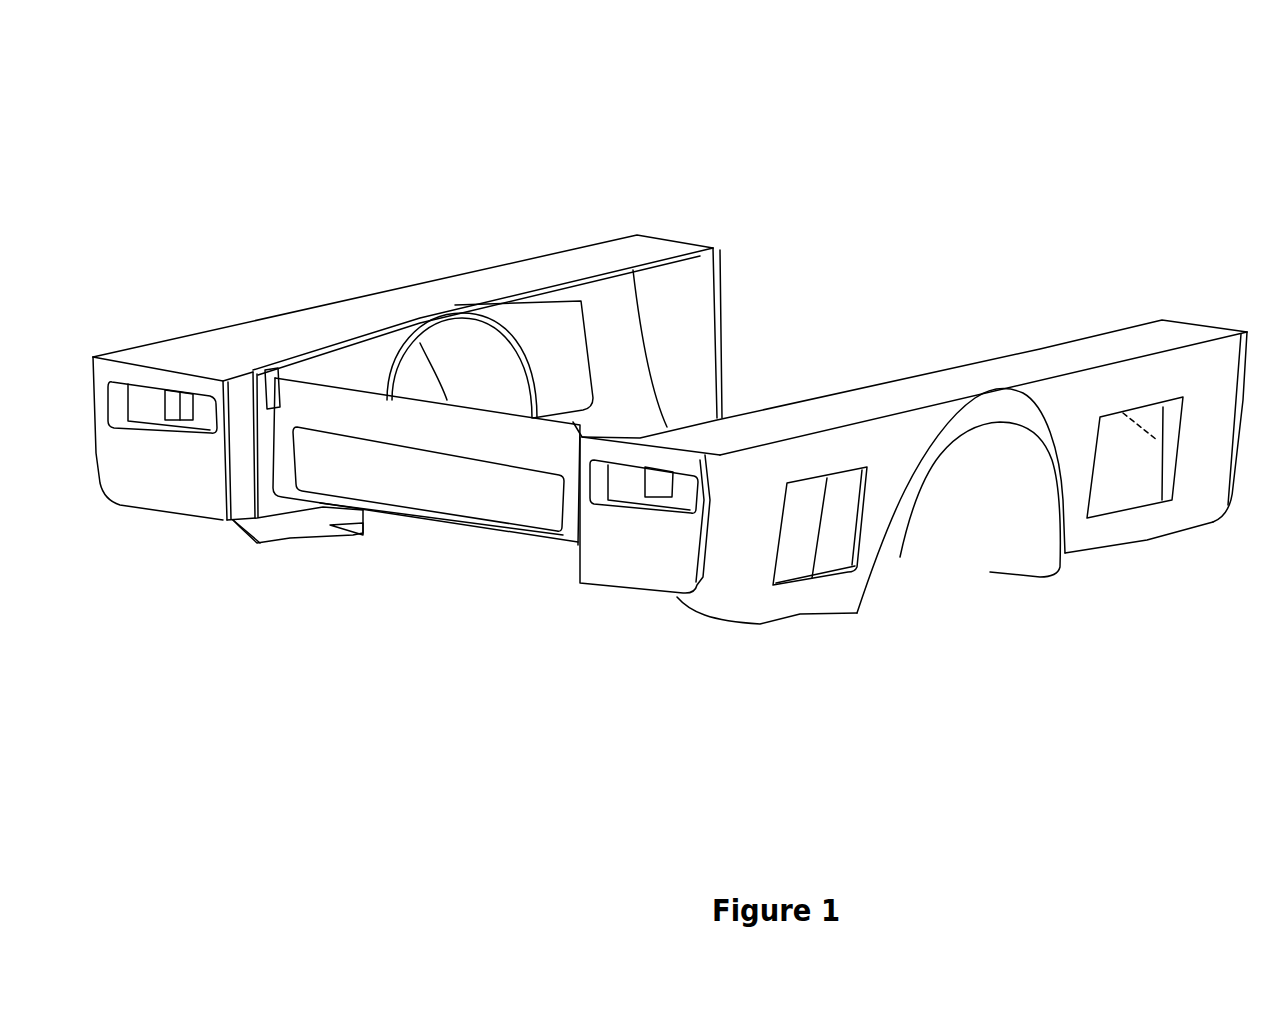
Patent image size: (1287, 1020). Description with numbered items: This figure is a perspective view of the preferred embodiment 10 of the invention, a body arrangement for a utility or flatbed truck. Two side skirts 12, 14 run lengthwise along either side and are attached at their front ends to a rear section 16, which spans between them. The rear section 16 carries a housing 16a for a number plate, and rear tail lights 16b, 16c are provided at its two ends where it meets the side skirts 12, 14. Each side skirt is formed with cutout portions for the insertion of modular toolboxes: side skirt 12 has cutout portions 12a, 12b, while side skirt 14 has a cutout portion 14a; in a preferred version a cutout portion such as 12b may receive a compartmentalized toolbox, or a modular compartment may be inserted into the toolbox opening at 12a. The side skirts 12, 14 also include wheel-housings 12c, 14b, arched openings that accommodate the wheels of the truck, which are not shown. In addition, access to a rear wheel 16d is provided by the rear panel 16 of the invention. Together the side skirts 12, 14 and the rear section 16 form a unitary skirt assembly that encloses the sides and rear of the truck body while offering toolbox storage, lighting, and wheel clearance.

The preferred embodiment 10 is at (905, 148).
The side skirt 12 is at (1077, 352).
The cutout portion 12a is at (1123, 482).
The cutout portion 12b is at (793, 560).
The wheel-housing 12c is at (927, 507).
The side skirt 14 is at (335, 322).
The cutout portion 14a is at (575, 318).
The wheel-housing 14b is at (462, 343).
The rear section 16 is at (363, 550).
The housing for a number plate 16a is at (443, 490).
The rear tail light 16b is at (147, 405).
The rear tail light 16c is at (627, 487).
The access to a rear wheel 16d is at (410, 513).